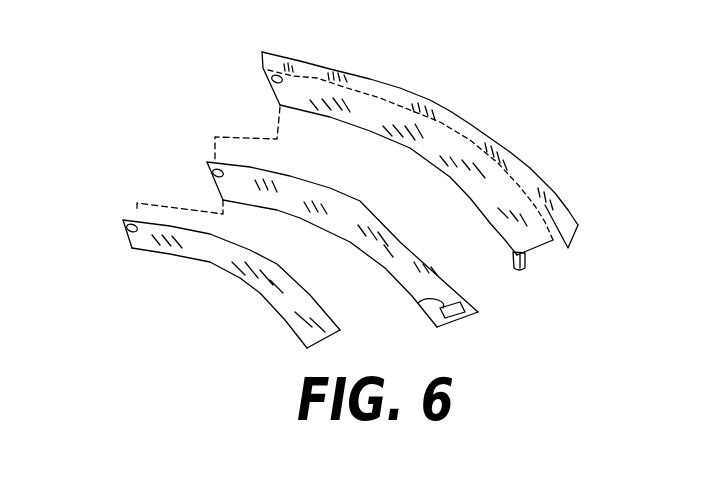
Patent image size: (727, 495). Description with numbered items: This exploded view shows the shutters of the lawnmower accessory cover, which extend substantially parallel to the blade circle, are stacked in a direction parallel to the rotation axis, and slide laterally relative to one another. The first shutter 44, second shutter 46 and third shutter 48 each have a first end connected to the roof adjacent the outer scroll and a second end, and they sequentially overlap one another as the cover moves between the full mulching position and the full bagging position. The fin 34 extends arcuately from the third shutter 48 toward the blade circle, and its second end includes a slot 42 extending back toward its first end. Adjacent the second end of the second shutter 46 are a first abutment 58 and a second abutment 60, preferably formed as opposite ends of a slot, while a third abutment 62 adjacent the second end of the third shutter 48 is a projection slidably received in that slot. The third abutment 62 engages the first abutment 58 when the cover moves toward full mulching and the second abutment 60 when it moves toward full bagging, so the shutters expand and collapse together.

The fin 34 is at (463, 120).
The slot 42 is at (559, 258).
The first shutter 44 is at (222, 264).
The second shutter 46 is at (350, 200).
The third shutter 48 is at (413, 150).
The first abutment 58 is at (460, 314).
The second abutment 60 is at (418, 303).
The third abutment 62 is at (522, 270).